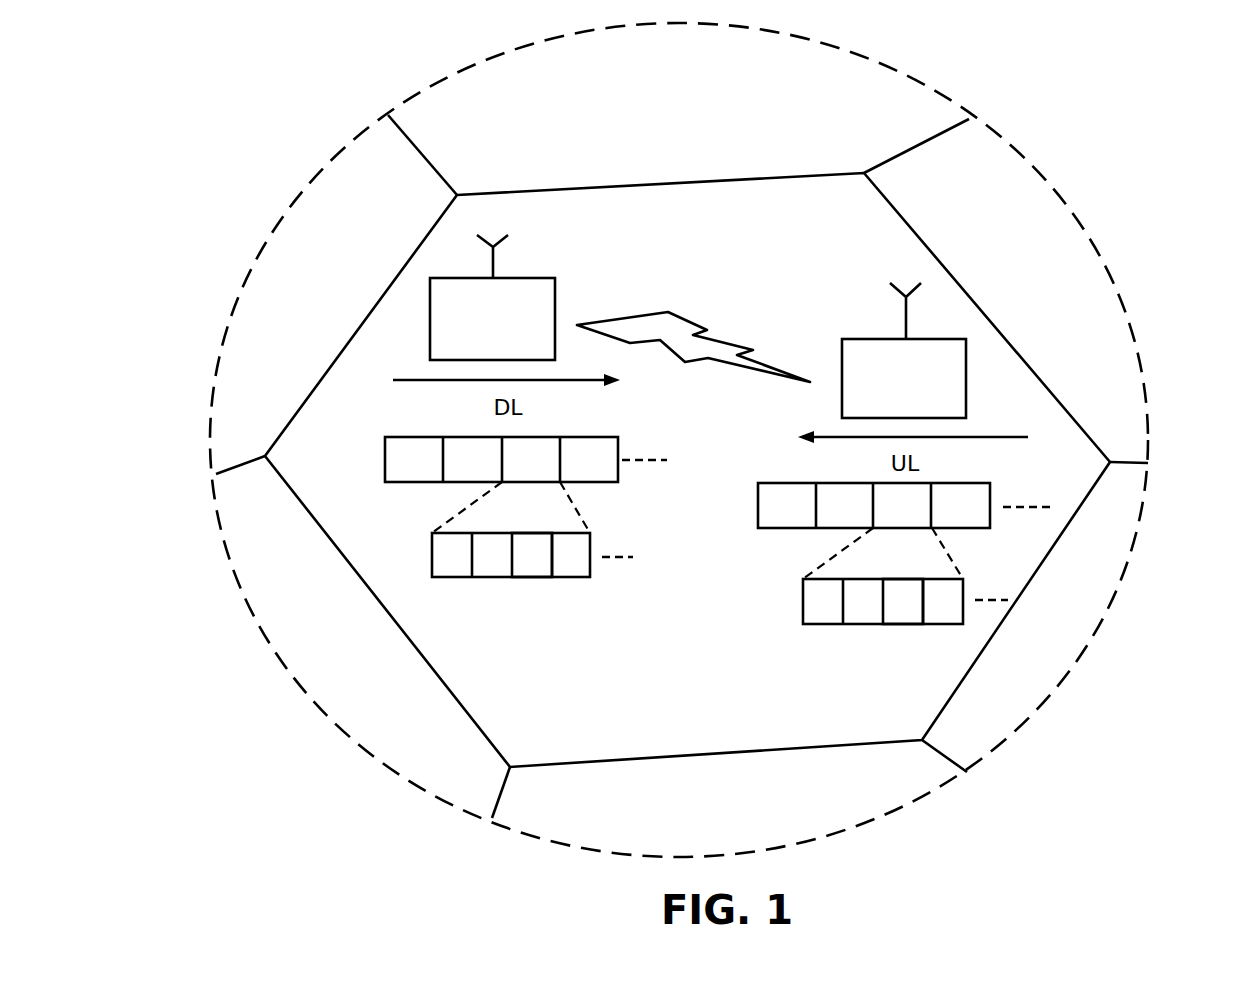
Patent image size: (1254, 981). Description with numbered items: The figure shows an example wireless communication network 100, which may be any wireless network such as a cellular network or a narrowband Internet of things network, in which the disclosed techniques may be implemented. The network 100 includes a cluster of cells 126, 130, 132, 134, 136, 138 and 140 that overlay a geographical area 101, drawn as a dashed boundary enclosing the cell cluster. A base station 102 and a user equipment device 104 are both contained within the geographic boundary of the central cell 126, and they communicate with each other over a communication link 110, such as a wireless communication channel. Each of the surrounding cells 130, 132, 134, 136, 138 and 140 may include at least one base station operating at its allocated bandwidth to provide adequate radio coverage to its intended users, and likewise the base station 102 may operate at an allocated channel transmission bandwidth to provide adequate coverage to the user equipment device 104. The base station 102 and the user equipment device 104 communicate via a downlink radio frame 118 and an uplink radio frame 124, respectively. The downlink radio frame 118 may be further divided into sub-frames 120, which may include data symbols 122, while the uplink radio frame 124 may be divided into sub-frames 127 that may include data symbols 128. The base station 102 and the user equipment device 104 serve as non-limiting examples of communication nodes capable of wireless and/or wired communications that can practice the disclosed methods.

The wireless communication network 100 is at (1174, 156).
The geographical area 101 is at (238, 298).
The base station 102 is at (471, 349).
The user equipment device 104 is at (883, 405).
The communication link 110 is at (682, 325).
The downlink radio frame 118 is at (392, 460).
The sub-frame 120 is at (493, 574).
The data symbol 122 is at (533, 575).
The uplink radio frame 124 is at (765, 508).
The cell 126 is at (691, 720).
The sub-frame 127 is at (877, 628).
The data symbol 128 is at (905, 620).
The cell 130 is at (293, 296).
The cell 132 is at (666, 125).
The cell 134 is at (1015, 288).
The cell 136 is at (1031, 645).
The cell 138 is at (709, 812).
The cell 140 is at (317, 658).